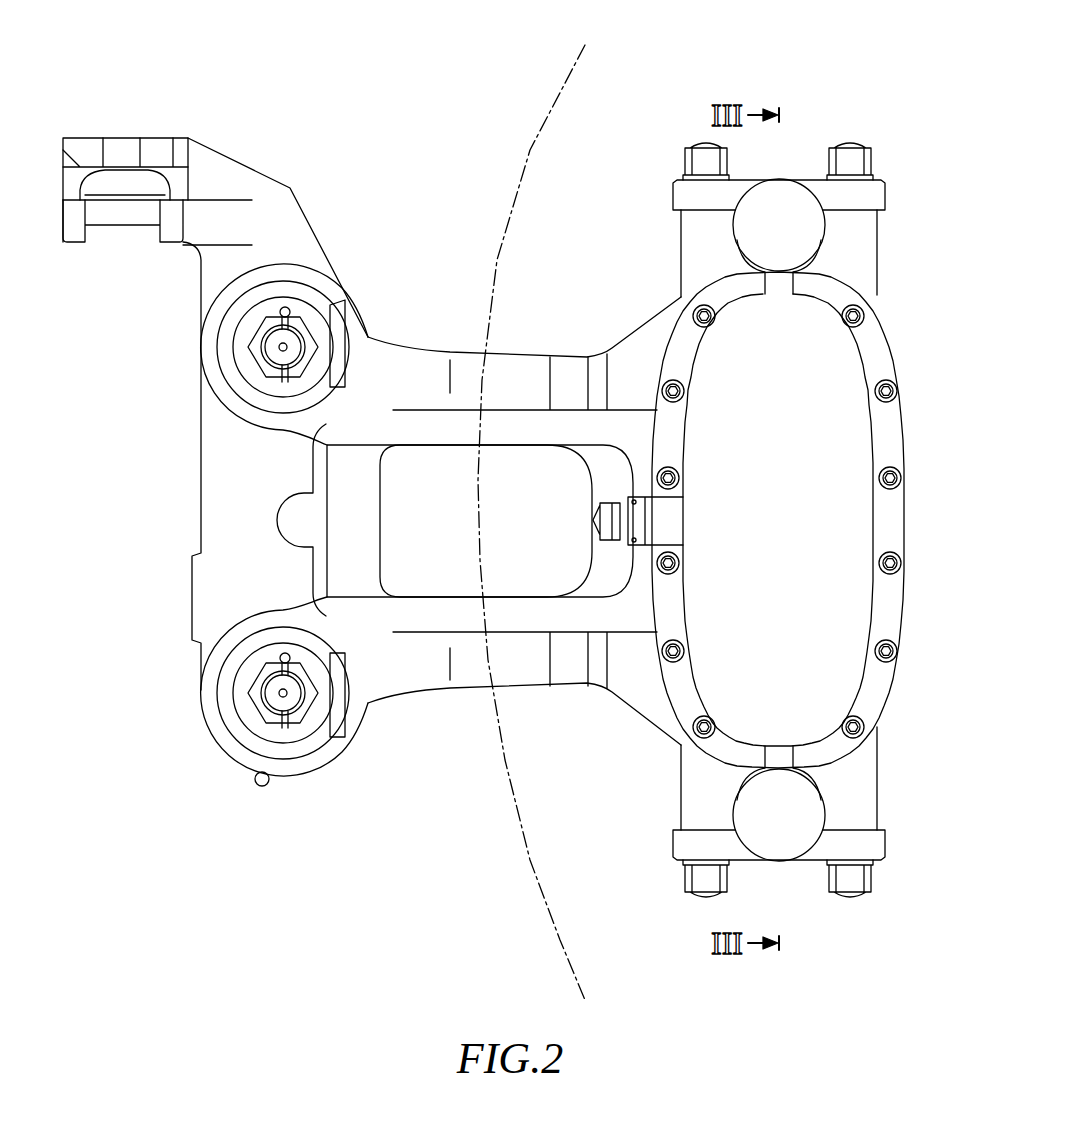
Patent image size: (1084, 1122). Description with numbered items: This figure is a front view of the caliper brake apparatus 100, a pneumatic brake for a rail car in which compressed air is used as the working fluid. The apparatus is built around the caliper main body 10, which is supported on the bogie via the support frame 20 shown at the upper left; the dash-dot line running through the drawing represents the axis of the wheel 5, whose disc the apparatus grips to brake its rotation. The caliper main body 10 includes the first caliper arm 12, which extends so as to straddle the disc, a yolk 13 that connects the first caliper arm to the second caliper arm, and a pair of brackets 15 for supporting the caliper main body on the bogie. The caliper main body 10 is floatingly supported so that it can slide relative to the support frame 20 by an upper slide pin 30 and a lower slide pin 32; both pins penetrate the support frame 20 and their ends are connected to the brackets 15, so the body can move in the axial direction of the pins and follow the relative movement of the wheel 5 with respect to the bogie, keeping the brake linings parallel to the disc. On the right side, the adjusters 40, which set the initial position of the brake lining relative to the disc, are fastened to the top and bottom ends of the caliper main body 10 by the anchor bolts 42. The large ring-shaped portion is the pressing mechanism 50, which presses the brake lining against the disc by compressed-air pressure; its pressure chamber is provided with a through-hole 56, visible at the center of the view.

The wheel 5 is at (540, 143).
The caliper main body 10 is at (636, 318).
The first caliper arm 12 is at (438, 435).
The yolk 13 is at (355, 515).
The brackets 15 is at (225, 365).
The support frame 20 is at (121, 138).
The upper slide pin 30 is at (275, 348).
The lower slide pin 32 is at (272, 695).
The adjusters 40 is at (790, 172).
The anchor bolts 42 is at (705, 153).
The pressing mechanism 50 is at (893, 340).
The through-hole 56 is at (636, 548).
The caliper brake apparatus 100 is at (893, 83).